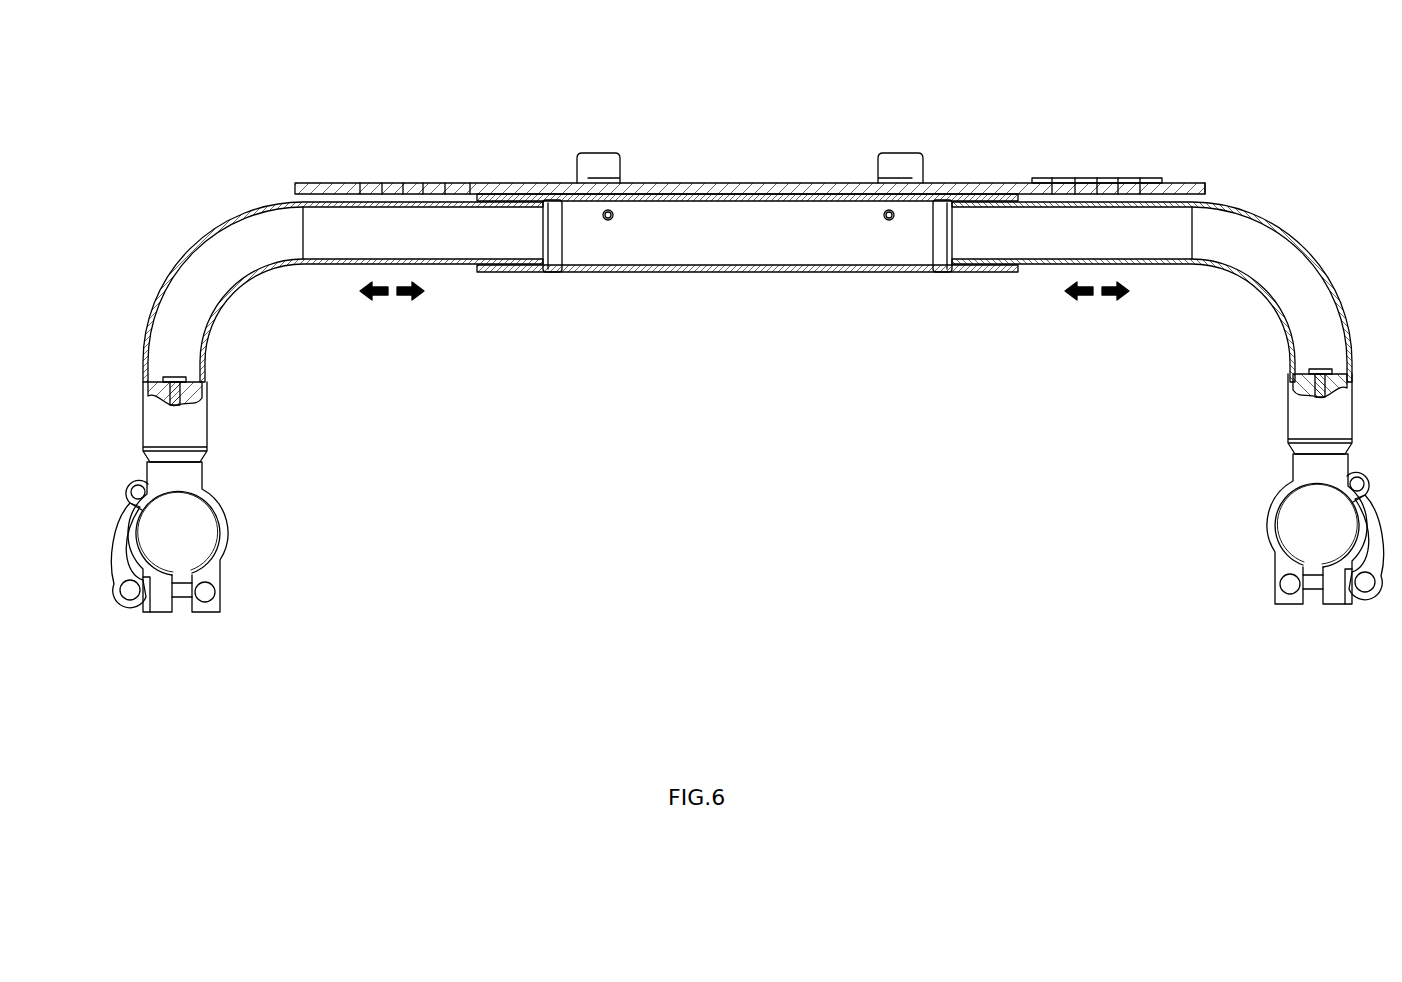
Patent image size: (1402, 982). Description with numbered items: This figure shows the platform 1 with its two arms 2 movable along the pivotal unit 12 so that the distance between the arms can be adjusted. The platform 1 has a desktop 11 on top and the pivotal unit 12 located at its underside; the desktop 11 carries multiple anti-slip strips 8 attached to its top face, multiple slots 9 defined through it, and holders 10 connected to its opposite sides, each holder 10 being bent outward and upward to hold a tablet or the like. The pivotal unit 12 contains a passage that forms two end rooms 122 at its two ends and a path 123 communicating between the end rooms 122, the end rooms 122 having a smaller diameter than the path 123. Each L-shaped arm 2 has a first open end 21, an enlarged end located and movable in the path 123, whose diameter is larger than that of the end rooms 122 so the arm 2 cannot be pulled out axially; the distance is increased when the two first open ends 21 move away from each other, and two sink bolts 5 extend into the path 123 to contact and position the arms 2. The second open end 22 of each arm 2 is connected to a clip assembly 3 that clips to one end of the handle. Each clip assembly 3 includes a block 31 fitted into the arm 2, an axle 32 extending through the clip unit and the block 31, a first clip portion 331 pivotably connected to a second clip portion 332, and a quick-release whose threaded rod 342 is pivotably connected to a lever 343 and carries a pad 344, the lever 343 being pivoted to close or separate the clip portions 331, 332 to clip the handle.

The platform 1 is at (754, 131).
The arm 2 is at (184, 243).
The clip assembly 3 is at (699, 495).
The sink bolt 5 is at (611, 209).
The anti-slip strip 8 is at (1105, 182).
The slot 9 is at (412, 192).
The holder 10 is at (905, 160).
The desktop 11 is at (1186, 186).
The pivotal unit 12 is at (746, 244).
The first open end 21 is at (572, 216).
The second open end 22 is at (207, 426).
The block 31 is at (155, 390).
The axle 32 is at (185, 378).
The end room 122 is at (475, 272).
The path 123 is at (743, 222).
The first clip portion 331 is at (135, 503).
The second clip portion 332 is at (225, 532).
The threaded rod 342 is at (180, 600).
The lever 343 is at (113, 548).
The pad 344 is at (145, 615).